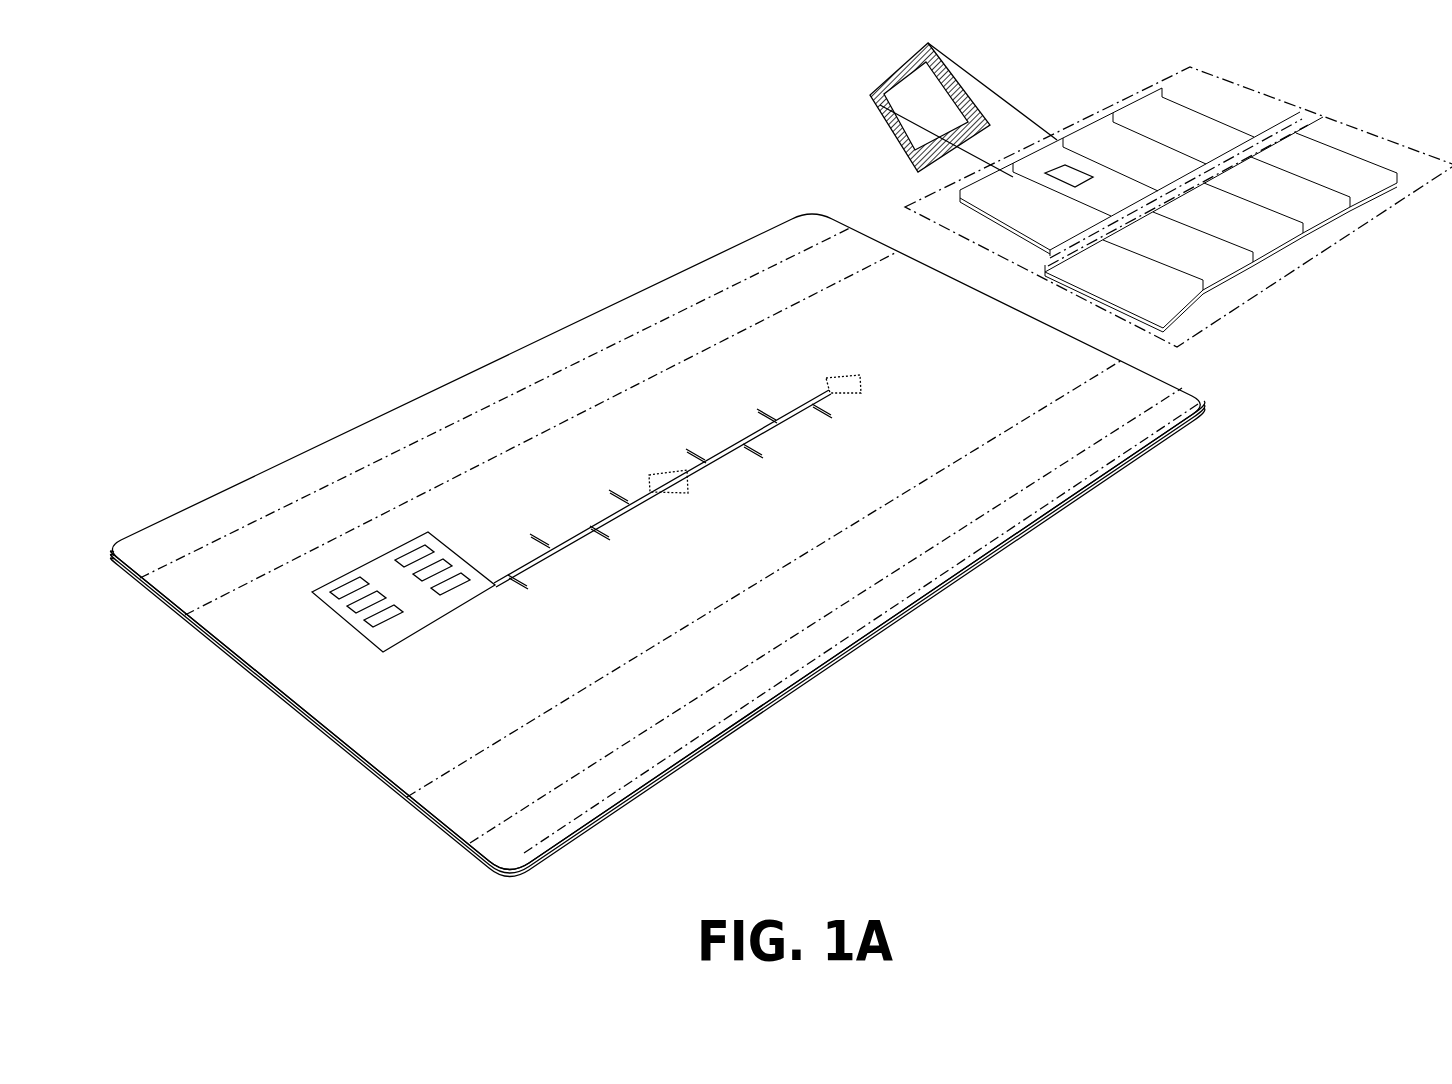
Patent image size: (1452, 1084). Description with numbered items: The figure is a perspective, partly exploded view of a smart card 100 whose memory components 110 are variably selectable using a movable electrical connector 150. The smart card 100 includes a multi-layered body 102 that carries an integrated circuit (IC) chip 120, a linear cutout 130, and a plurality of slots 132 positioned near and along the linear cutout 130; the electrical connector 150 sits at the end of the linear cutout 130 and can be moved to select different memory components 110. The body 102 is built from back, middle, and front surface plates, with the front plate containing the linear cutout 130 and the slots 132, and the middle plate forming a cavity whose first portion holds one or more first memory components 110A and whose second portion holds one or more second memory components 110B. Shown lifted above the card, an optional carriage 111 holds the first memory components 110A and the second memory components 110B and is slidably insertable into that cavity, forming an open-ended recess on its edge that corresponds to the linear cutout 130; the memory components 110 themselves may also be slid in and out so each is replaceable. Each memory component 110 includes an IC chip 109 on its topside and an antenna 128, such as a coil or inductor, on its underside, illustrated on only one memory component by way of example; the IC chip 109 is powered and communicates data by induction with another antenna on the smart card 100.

The smart card 100 is at (290, 236).
The multi-layered body 102 is at (855, 649).
The IC chip 109 is at (1062, 165).
The memory components 110 is at (1122, 223).
The first memory components 110A is at (922, 212).
The second memory components 110B is at (1314, 130).
The carriage 111 is at (1325, 262).
The integrated circuit (IC) chip 120 is at (410, 634).
The antenna 128 is at (898, 128).
The linear cutout 130 is at (570, 535).
The slots 132 is at (828, 420).
The electrical connector 150 is at (862, 394).